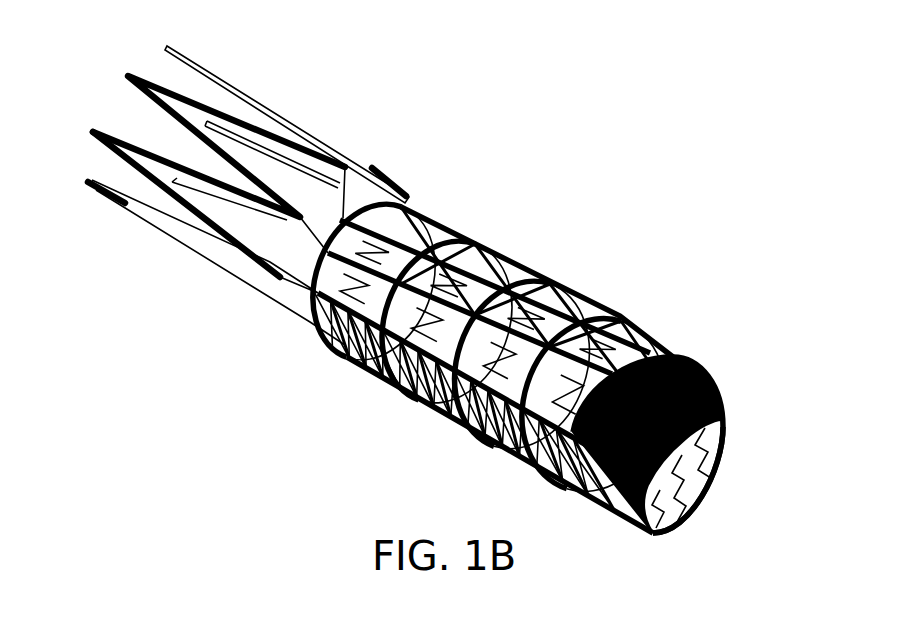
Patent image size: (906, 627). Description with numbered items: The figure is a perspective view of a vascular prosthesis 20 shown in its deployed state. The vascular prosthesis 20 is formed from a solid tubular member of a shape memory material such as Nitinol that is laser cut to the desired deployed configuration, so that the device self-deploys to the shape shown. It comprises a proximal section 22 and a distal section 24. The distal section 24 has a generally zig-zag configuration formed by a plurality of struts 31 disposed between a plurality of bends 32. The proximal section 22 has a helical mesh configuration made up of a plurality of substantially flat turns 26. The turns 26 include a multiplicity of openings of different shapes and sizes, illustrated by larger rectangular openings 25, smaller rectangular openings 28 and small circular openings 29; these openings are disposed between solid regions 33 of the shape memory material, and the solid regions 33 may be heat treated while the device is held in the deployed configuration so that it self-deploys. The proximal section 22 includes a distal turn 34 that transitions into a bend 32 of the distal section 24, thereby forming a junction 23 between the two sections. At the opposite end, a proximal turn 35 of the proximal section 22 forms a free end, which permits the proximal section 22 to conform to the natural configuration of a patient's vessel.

The vascular prosthesis 20 is at (553, 170).
The proximal section 22 is at (578, 271).
The junction 23 is at (420, 186).
The distal section 24 is at (325, 120).
The larger rectangular openings 25 is at (350, 297).
The turns 26 is at (418, 398).
The smaller rectangular openings 28 is at (688, 497).
The small circular openings 29 is at (701, 346).
The struts 31 is at (118, 156).
The bends 32 is at (92, 127).
The solid regions 33 is at (705, 413).
The distal turn 34 is at (436, 208).
The proximal turn 35 is at (736, 384).